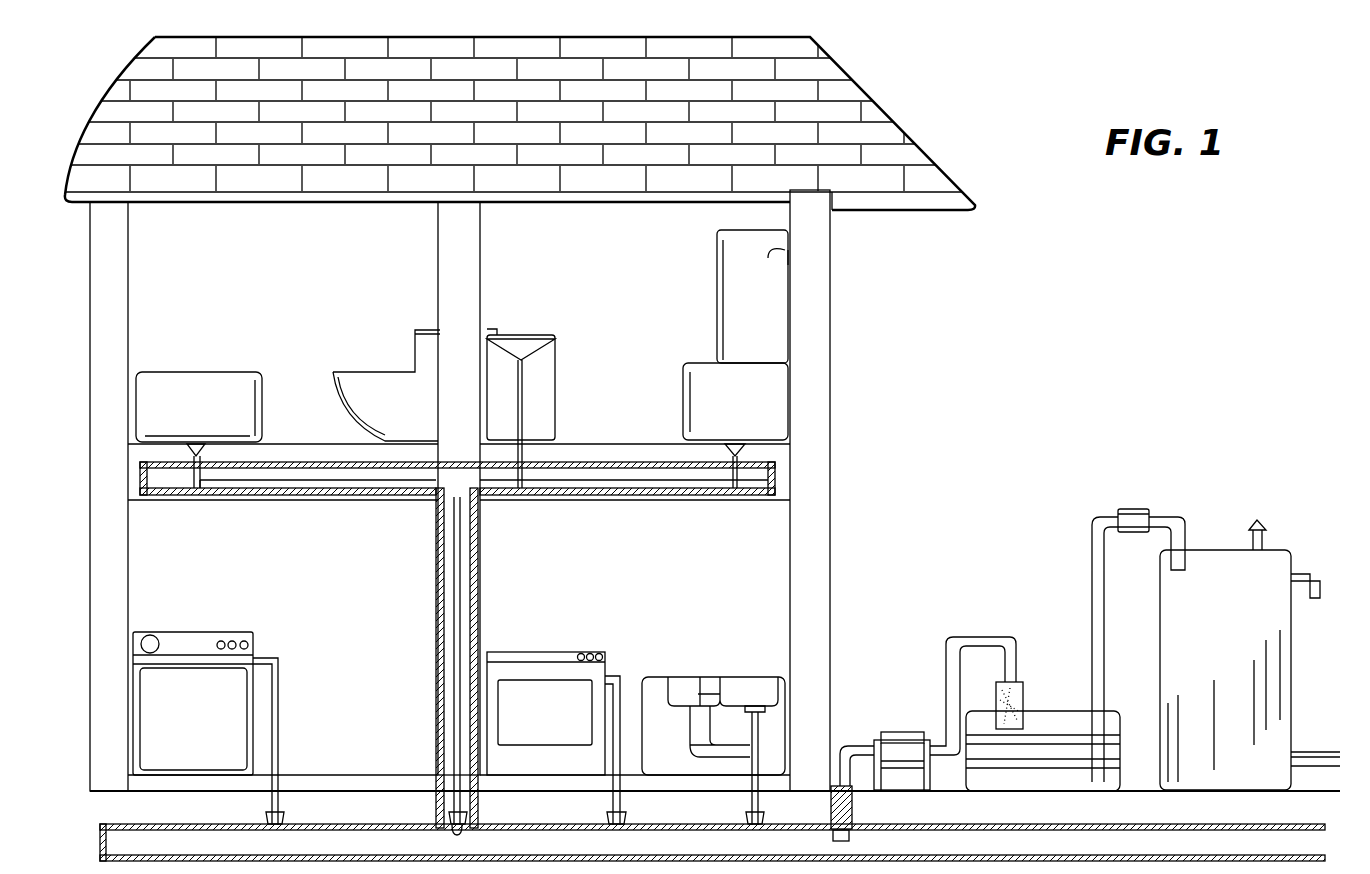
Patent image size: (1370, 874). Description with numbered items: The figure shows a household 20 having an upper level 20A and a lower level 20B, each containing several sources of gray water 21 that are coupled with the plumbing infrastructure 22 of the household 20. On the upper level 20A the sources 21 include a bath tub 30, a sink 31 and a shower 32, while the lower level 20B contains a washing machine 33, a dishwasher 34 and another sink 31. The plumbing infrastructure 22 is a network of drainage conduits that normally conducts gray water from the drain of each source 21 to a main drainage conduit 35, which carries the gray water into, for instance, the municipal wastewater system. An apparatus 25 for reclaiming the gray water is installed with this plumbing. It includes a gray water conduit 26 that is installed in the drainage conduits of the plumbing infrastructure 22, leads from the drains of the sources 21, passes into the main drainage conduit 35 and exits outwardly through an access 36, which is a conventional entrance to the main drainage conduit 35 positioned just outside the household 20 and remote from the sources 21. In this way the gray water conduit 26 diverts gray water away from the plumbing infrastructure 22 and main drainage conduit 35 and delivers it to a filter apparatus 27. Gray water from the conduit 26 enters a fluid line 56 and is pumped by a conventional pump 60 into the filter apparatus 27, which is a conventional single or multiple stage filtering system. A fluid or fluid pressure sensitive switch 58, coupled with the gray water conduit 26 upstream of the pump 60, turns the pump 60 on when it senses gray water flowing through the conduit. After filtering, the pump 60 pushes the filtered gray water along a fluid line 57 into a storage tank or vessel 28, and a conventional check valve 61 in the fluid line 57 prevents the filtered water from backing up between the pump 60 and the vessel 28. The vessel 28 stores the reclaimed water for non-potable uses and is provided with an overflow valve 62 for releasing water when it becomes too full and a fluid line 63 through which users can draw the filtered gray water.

The household 20 is at (903, 128).
The upper level 20A is at (543, 241).
The lower level 20B is at (330, 547).
The sources of gray water 21 is at (338, 390).
The plumbing infrastructure 22 is at (476, 582).
The apparatus for reclaiming the gray water 25 is at (1027, 522).
The gray water conduit 26 is at (452, 585).
The filter apparatus 27 is at (1044, 714).
The storage tank or vessel 28 is at (1285, 552).
The bath tub 30 is at (183, 386).
The sink 31 is at (373, 388).
The shower 32 is at (740, 298).
The washing machine 33 is at (186, 638).
The dishwasher 34 is at (588, 668).
The main drainage conduit 35 is at (1065, 850).
The access 36 is at (855, 790).
The fluid line 56 is at (948, 636).
The fluid line 57 is at (1096, 595).
The fluid or fluid pressure sensitive switch 58 is at (852, 838).
The pump 60 is at (897, 740).
The check valve 61 is at (1133, 508).
The overflow valve 62 is at (1318, 594).
The fluid line 63 is at (1313, 754).